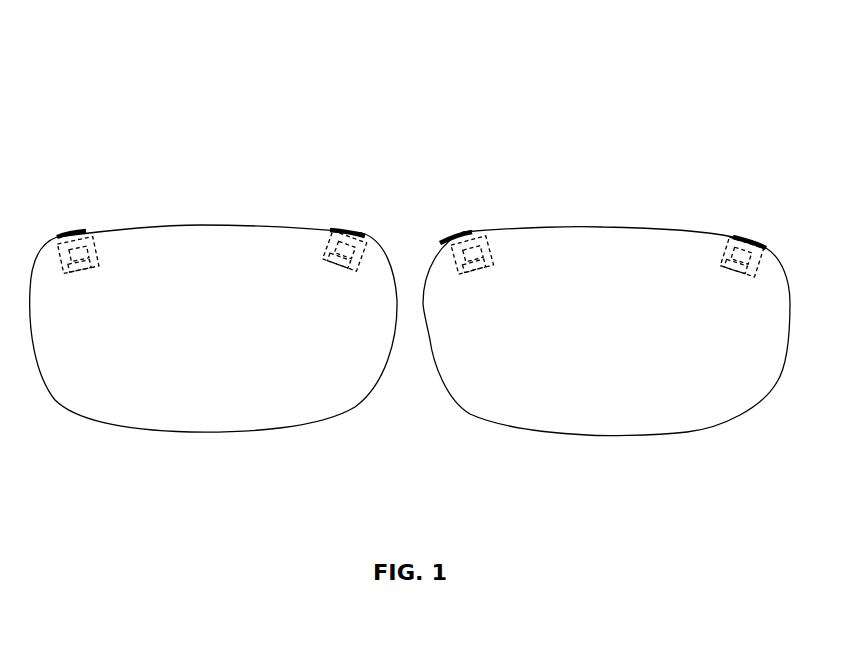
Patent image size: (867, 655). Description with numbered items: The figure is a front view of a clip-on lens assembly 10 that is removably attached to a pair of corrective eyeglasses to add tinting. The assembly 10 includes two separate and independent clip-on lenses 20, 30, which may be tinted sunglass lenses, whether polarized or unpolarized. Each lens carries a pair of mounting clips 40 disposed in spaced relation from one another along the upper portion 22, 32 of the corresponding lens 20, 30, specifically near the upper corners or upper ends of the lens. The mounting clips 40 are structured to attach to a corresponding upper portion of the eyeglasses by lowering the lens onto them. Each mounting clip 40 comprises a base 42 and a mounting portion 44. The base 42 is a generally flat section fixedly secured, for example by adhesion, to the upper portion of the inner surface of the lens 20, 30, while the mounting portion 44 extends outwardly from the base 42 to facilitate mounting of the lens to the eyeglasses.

The clip-on lens assembly 10 is at (447, 91).
The clip-on lens 20 is at (587, 205).
The upper portion 22 is at (610, 248).
The clip-on lens 30 is at (163, 185).
The upper portion 32 is at (173, 247).
The mounting clip 40 is at (76, 229).
The base 42 is at (65, 247).
The mounting portion 44 is at (86, 284).